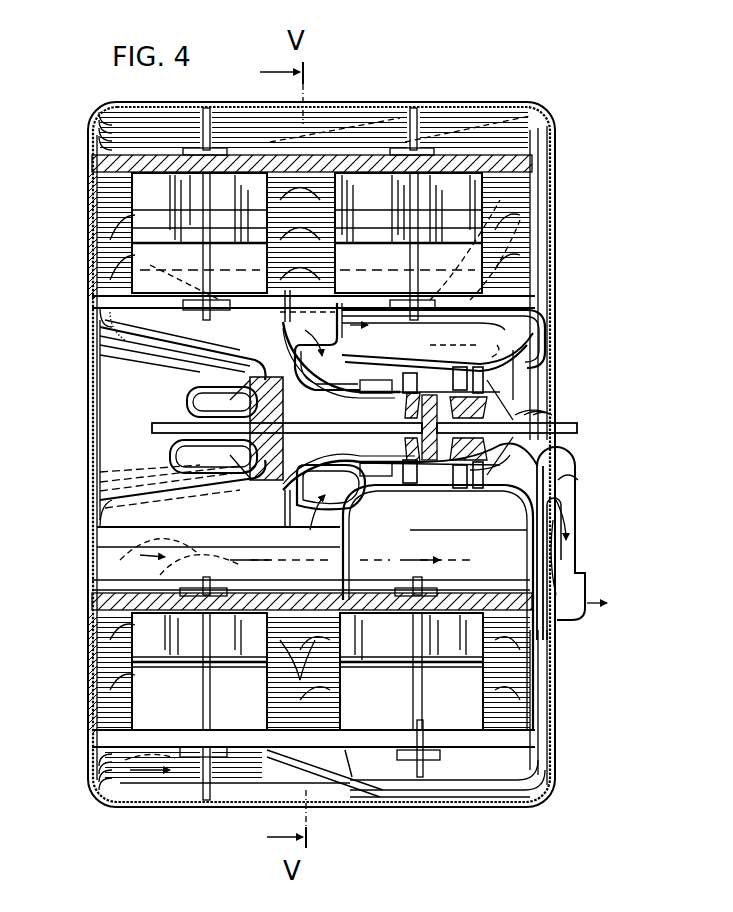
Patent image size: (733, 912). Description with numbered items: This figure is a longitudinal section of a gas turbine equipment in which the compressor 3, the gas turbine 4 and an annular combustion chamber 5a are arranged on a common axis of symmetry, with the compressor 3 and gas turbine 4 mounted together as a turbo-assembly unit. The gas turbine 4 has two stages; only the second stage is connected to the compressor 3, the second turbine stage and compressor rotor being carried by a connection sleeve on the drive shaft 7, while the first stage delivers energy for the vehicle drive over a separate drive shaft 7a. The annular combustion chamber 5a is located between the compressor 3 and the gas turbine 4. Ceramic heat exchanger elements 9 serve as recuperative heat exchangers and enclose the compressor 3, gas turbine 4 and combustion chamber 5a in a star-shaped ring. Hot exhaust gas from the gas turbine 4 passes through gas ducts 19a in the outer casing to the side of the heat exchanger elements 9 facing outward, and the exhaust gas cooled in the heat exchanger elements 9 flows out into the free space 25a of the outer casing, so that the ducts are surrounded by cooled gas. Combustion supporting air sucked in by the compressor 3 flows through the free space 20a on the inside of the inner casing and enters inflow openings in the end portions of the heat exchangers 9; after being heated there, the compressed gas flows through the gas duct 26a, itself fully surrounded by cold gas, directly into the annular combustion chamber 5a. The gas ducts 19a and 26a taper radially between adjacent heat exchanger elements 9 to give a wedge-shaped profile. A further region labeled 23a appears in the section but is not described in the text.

The compressor 3 is at (243, 390).
The gas turbine 4 is at (419, 372).
The annular combustion chamber 5a is at (350, 356).
The drive shaft 7 is at (172, 423).
The separate drive shaft 7a is at (577, 423).
The ceramic heat exchanger elements 9 is at (522, 250).
The gas ducts 19a is at (357, 723).
The free space 20a is at (120, 560).
The lower scroll chamber 23a is at (327, 560).
The free space 25a is at (62, 730).
The gas duct 26a is at (258, 222).